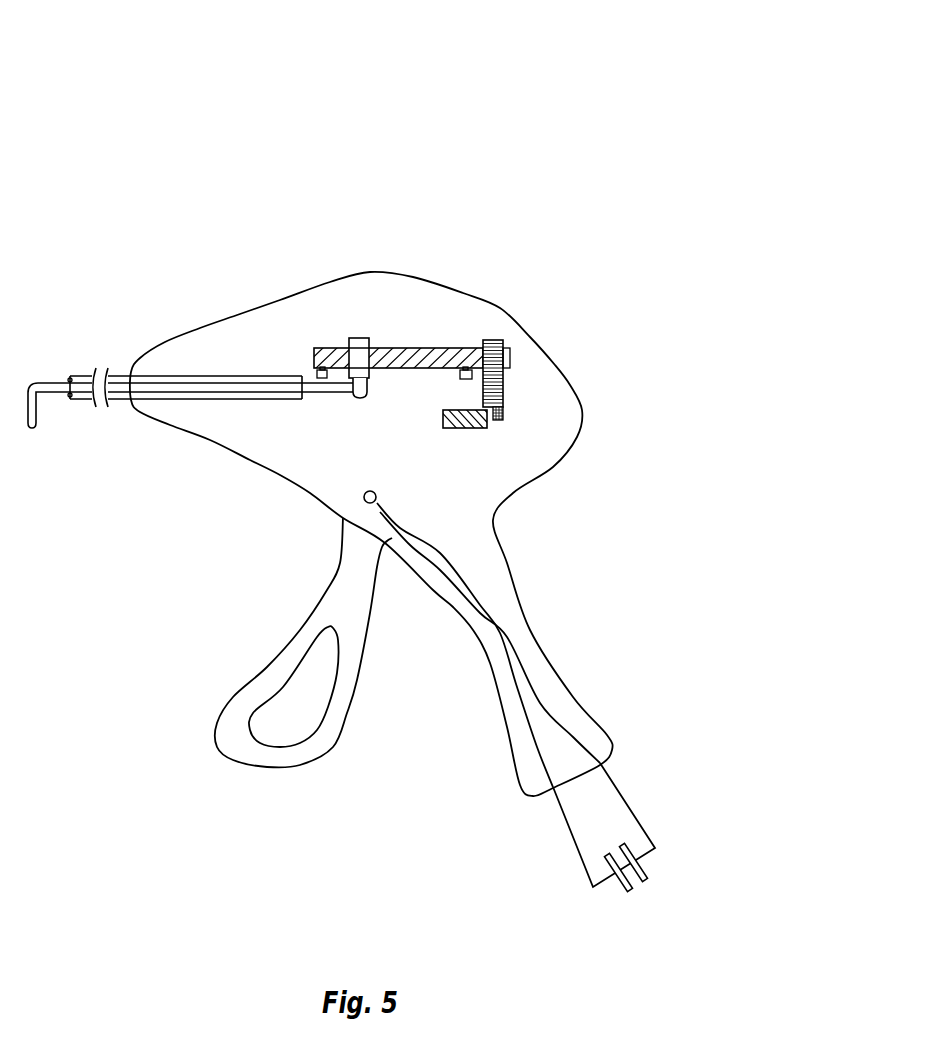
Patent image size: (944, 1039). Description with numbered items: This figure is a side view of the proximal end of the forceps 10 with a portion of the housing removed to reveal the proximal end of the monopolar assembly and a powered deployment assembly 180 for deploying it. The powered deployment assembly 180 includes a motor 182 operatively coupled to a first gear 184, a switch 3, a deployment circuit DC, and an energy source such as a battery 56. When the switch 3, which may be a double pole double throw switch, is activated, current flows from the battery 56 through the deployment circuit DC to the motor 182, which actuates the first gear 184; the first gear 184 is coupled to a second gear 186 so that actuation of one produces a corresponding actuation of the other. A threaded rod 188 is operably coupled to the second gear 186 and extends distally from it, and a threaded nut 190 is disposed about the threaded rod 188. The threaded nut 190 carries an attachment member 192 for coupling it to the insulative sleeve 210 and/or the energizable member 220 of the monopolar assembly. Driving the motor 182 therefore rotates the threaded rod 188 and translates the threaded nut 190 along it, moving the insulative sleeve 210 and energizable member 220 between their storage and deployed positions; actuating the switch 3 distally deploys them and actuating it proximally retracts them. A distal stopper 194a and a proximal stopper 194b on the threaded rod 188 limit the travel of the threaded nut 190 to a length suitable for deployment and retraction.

The surgical instrument 10 is at (100, 112).
The insulative sleeve 210 is at (83, 377).
The energizable member 220 is at (50, 377).
The powered deployment assembly 180 is at (445, 339).
The threaded rod 188 is at (440, 347).
The threaded nut 190 is at (352, 337).
The attachment member 192 is at (358, 399).
The distal stopper 194a is at (318, 369).
The proximal stopper 194b is at (465, 369).
The second gear 186 is at (503, 394).
The first gear 184 is at (501, 419).
The motor 182 is at (460, 428).
The switch 3 is at (363, 497).
The deployment circuit DC is at (503, 633).
The battery 56 is at (666, 841).